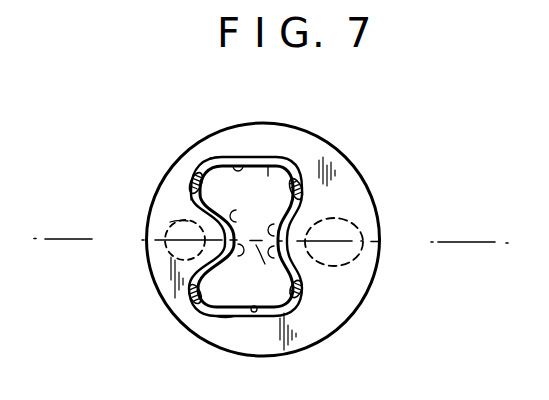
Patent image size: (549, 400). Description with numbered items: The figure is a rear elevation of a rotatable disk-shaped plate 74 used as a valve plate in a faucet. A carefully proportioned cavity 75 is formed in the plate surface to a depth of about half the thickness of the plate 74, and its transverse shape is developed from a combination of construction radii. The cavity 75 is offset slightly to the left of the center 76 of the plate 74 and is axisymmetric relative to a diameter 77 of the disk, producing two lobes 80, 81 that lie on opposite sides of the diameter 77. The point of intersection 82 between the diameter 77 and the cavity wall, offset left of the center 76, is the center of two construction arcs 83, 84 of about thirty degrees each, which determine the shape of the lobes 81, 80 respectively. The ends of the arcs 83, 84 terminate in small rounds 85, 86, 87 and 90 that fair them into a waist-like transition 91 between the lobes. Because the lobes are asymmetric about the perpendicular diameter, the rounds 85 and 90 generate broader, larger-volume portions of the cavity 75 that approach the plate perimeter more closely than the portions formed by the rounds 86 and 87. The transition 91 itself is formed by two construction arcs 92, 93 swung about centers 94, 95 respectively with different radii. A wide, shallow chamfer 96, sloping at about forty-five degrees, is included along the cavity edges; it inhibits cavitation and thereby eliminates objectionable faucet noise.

The rotatable disk-shaped plate 74 is at (237, 338).
The cavity 75 is at (249, 172).
The center of the plate 76 is at (257, 243).
The diameter 77 is at (165, 277).
The lobe 80 is at (229, 307).
The lobe 81 is at (268, 178).
The point of intersection 82 is at (191, 196).
The construction arc 83 is at (259, 175).
The construction arc 84 is at (262, 311).
The round 85 is at (197, 166).
The round 86 is at (296, 184).
The round 87 is at (298, 298).
The round 90 is at (207, 311).
The waist-like transition 91 is at (267, 208).
The construction arc 92 is at (228, 247).
The construction arc 93 is at (284, 213).
The center 94 is at (173, 223).
The center 95 is at (359, 242).
The chamfer 96 is at (215, 160).